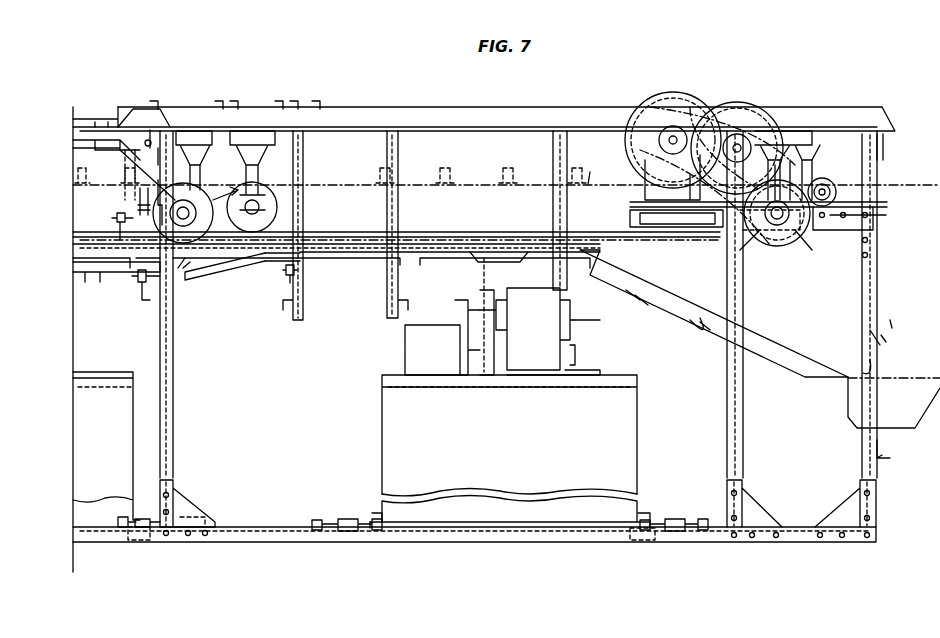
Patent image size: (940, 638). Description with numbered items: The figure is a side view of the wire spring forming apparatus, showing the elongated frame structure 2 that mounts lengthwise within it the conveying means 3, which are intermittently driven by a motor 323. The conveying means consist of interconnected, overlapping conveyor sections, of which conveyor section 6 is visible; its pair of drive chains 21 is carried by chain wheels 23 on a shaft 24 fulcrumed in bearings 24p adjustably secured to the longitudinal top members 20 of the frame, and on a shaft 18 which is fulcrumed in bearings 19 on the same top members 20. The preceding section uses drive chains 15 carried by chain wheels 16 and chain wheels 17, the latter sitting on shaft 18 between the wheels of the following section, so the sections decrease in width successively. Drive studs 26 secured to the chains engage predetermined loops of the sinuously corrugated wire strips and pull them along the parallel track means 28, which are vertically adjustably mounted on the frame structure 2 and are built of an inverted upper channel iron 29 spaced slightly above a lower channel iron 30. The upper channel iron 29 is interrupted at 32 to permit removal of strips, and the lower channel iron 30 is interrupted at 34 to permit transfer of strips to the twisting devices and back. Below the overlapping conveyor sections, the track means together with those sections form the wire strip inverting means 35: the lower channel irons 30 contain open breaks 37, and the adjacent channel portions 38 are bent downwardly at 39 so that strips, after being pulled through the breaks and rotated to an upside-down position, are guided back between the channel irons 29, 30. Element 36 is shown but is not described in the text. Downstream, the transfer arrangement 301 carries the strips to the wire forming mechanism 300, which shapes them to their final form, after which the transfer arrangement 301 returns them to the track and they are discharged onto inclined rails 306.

The frame structure 2 is at (329, 548).
The conveying means 3 is at (611, 198).
The conveyor section 6 is at (350, 182).
The drive chains 15 is at (98, 184).
The chain wheels 16 is at (513, 204).
The chain wheels 17 is at (150, 198).
The shaft 18 is at (175, 190).
The bearings 19 is at (194, 165).
The longitudinal top members 20 is at (478, 112).
The drive chains 21 is at (595, 169).
The chain wheels 23 is at (800, 238).
The shaft 24 is at (778, 240).
The bearings 24p is at (808, 163).
The drive studs 26 is at (503, 181).
The track means 28 is at (343, 243).
The upper channel iron 29 is at (455, 244).
The lower channel iron 30 is at (368, 258).
The interruption 32 is at (214, 192).
The interruption 34 is at (475, 269).
The wire strip inverting means 35 is at (191, 280).
The support 36 is at (118, 260).
The open breaks 37 is at (115, 216).
The channel portions 38 is at (270, 262).
The inclined end portions 39 is at (224, 268).
The wire forming mechanism 300 is at (583, 345).
The transfer arrangement 301 is at (476, 372).
The inclined rails 306 is at (694, 312).
The motor 323 is at (757, 94).